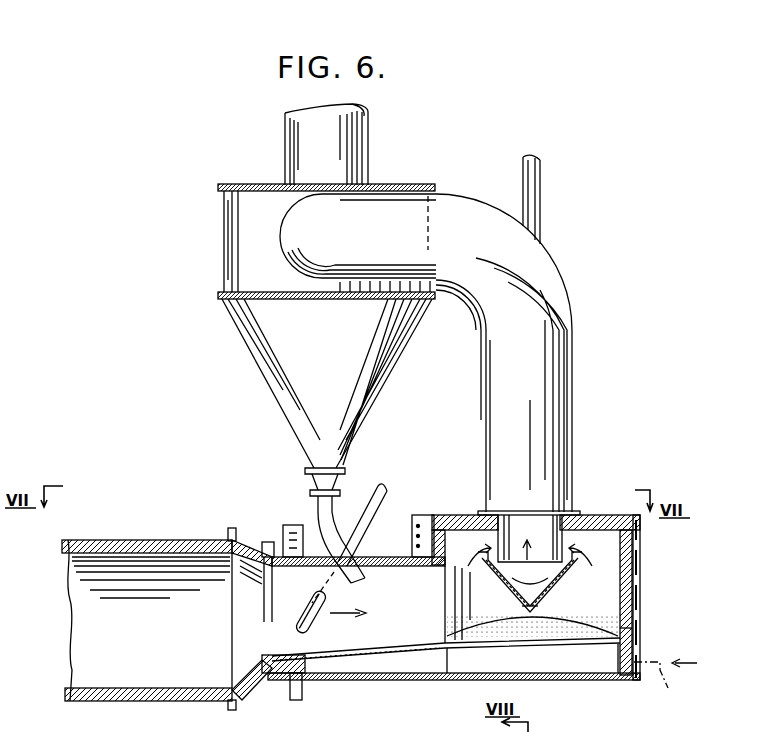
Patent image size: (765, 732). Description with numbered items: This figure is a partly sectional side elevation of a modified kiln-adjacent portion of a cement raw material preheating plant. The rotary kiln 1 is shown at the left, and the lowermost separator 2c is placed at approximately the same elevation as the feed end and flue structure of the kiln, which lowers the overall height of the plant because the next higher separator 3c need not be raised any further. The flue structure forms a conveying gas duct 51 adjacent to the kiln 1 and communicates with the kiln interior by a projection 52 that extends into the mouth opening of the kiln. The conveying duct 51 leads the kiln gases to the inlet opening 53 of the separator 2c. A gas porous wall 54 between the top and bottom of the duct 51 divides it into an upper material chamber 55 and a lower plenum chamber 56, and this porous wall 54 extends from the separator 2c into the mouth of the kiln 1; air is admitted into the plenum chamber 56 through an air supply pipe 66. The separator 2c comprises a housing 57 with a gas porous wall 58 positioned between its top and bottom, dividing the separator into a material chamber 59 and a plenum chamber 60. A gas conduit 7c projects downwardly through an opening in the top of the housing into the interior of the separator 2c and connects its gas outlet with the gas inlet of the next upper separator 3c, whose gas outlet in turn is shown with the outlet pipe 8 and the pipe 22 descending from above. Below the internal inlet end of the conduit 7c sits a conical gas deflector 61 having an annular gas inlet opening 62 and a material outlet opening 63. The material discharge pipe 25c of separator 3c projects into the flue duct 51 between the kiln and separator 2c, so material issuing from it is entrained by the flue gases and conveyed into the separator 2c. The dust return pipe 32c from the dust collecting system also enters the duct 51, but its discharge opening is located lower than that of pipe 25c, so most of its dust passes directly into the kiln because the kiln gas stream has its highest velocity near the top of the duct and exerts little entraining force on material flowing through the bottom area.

The rotary kiln 1 is at (148, 540).
The lowermost separator 2c is at (651, 563).
The next higher separator 3c is at (222, 243).
The gas conduit 7c is at (572, 403).
The gas conduit 8 is at (368, 152).
The pipe 22 is at (540, 216).
The material discharge pipe 25c is at (318, 525).
The dust return pipe 32c is at (372, 492).
The conveying gas duct 51 is at (405, 557).
The projection 52 is at (262, 690).
The inlet opening 53 is at (443, 622).
The gas porous wall 54 is at (381, 657).
The upper material chamber 55 is at (367, 637).
The lower plenum chamber 56 is at (333, 667).
The housing 57 is at (634, 634).
The gas porous wall 58 is at (592, 631).
The material chamber 59 is at (612, 594).
The plenum chamber 60 is at (594, 670).
The conical gas deflector 61 is at (508, 596).
The annular gas inlet opening 62 is at (566, 550).
The material outlet opening 63 is at (548, 606).
The air supply pipe 66 is at (665, 684).